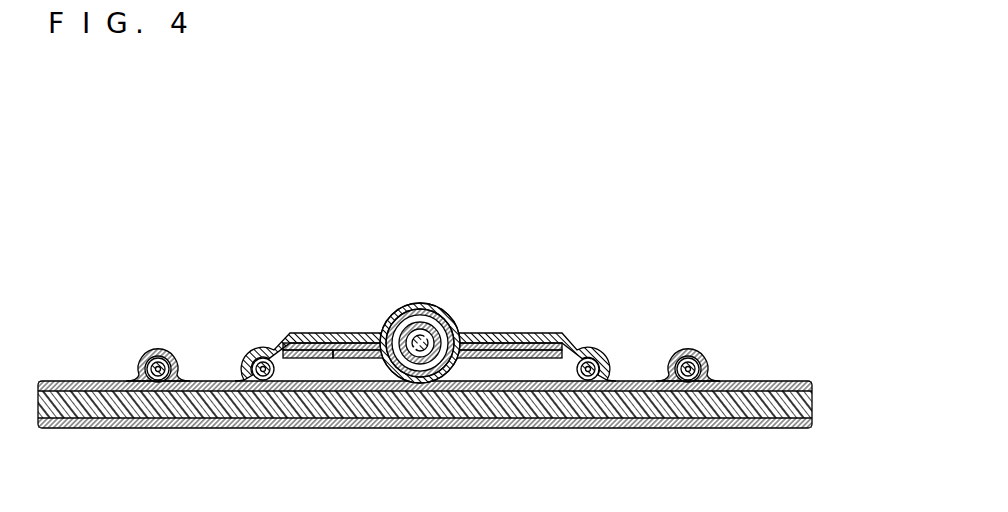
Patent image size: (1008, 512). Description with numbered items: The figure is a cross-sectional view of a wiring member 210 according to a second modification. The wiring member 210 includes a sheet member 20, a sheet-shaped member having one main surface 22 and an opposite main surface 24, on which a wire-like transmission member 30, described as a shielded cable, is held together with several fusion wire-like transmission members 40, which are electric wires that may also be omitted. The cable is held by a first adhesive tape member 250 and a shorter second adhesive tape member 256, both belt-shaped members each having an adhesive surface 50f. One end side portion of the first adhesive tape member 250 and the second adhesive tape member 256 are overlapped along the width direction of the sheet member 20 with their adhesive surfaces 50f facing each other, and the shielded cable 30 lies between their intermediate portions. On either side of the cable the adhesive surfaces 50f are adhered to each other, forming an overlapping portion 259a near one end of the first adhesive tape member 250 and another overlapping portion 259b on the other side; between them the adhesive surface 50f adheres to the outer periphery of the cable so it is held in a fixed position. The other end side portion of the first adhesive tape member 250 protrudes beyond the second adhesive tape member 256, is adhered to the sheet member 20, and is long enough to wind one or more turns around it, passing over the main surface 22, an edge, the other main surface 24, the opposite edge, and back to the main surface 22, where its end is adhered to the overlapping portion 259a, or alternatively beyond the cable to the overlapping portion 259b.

The sheet member 20 is at (770, 422).
The main surface 22 is at (747, 388).
The main surface 24 is at (719, 426).
The wire-like transmission member 30 is at (433, 303).
The fusion wire-like transmission member 40 is at (159, 348).
The adhesive surface 50f is at (341, 333).
The wiring member 210 is at (819, 338).
The first adhesive tape member 250 is at (573, 345).
The second adhesive tape member 256 is at (362, 358).
The overlapping portion 259a is at (292, 358).
The overlapping portion 259b is at (477, 358).